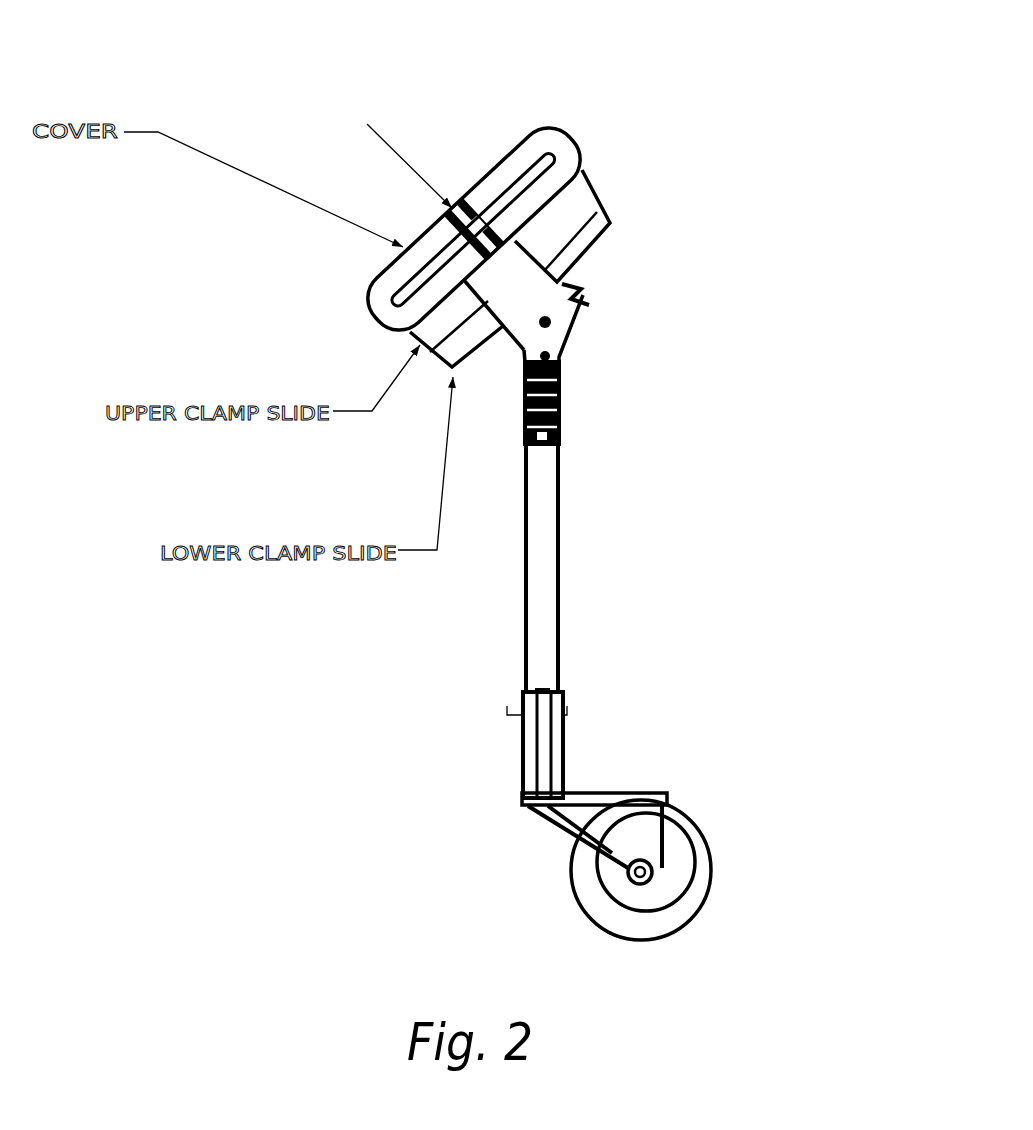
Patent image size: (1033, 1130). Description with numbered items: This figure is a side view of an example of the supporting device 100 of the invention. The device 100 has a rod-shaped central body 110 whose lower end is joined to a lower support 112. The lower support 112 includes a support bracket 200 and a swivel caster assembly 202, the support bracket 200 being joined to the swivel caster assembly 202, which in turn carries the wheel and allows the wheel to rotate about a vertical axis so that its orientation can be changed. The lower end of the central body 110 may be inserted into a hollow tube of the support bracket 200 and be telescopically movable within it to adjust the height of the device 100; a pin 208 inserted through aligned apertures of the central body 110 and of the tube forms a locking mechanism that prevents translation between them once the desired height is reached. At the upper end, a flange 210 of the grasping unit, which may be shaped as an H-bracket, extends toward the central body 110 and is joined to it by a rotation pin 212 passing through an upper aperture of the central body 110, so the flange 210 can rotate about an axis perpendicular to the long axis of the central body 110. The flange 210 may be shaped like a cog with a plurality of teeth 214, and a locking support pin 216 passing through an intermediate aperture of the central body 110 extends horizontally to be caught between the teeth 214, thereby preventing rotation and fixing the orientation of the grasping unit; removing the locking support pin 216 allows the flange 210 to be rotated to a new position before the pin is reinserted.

The device 100 is at (271, 60).
The central body 110 is at (560, 566).
The lower support 112 is at (465, 752).
The support bracket 200 is at (557, 732).
The swivel caster assembly 202 is at (556, 839).
The pin 208 is at (503, 706).
The flange 210 is at (546, 245).
The rotation pin 212 is at (560, 332).
The teeth 214 is at (583, 304).
The locking support pin 216 is at (568, 383).